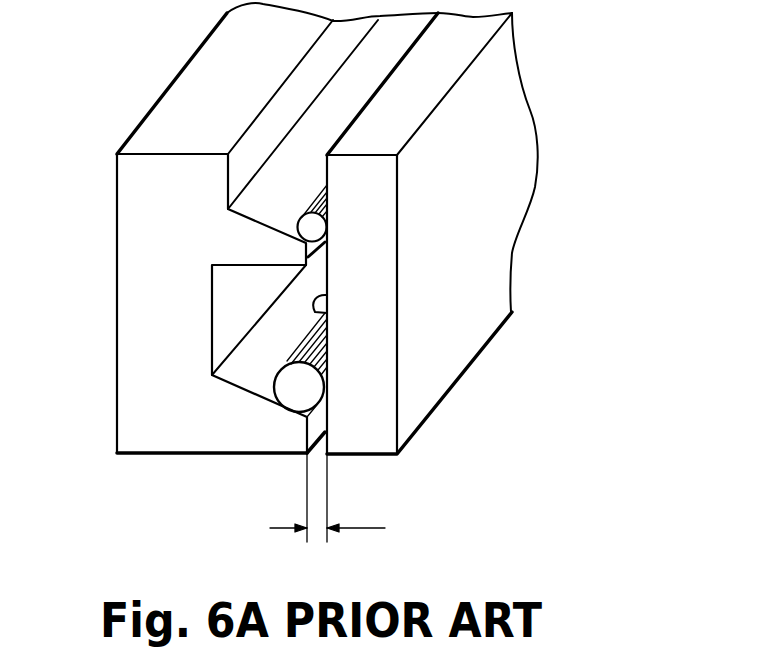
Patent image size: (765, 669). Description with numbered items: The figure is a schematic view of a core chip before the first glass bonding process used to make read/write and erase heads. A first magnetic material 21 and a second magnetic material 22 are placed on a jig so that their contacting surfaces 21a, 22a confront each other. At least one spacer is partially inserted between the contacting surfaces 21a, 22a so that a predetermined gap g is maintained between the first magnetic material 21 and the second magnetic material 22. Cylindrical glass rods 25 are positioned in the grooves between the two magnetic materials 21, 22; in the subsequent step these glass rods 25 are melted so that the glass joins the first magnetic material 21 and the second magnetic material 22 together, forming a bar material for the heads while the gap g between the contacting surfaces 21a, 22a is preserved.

The first magnetic material 21 is at (362, 438).
The contacting surface 21a is at (328, 296).
The second magnetic material 22 is at (178, 435).
The contacting surface 22a is at (326, 244).
The cylindrical glass rod 25 is at (316, 226).
The gap g is at (327, 497).